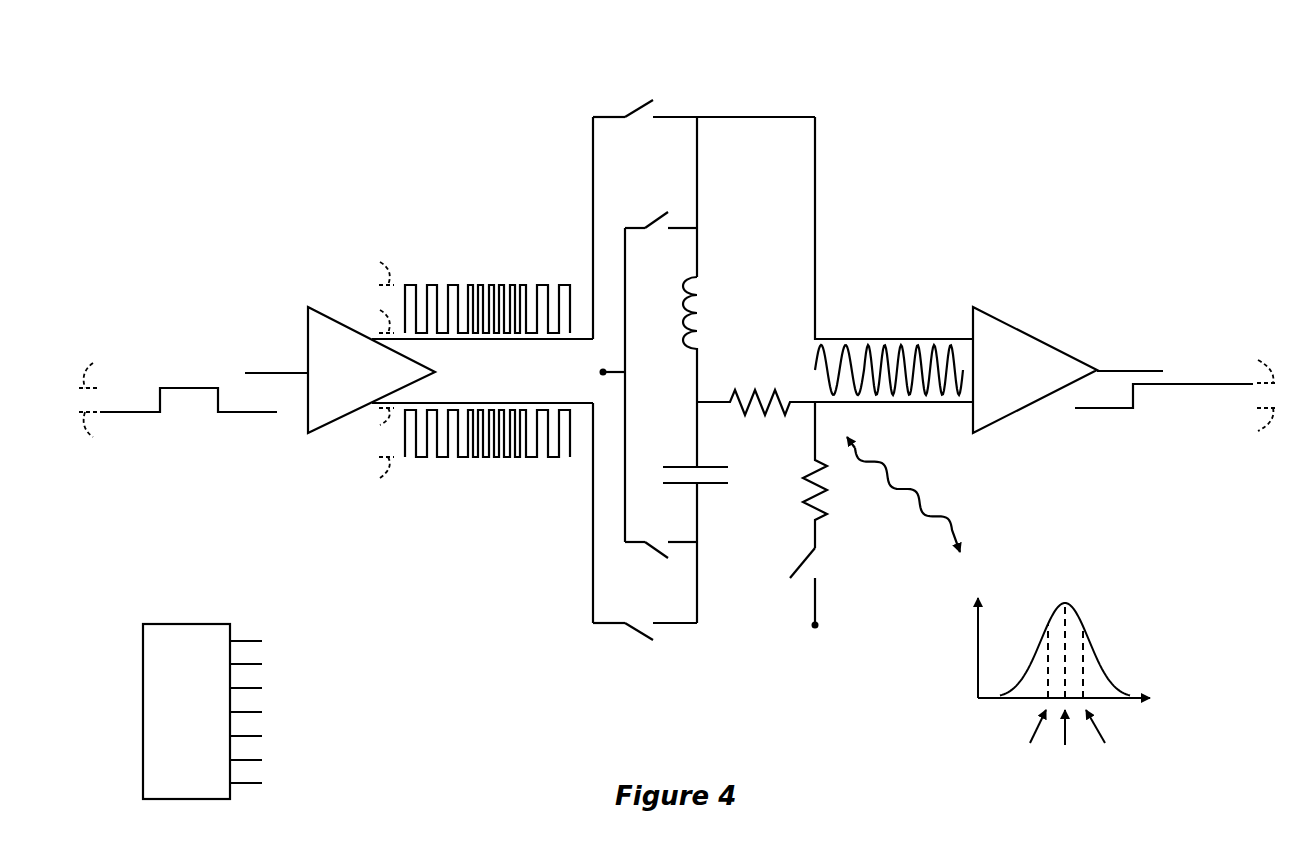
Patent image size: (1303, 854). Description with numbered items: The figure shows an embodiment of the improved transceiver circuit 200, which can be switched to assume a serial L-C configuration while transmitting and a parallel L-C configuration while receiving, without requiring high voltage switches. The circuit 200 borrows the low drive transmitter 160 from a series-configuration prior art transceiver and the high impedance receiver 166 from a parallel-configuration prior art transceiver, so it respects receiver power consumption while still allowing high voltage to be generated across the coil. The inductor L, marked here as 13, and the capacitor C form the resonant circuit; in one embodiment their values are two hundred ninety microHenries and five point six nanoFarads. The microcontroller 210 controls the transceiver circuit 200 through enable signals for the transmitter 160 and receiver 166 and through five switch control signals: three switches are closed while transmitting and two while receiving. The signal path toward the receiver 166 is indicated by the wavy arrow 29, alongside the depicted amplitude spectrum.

The improved transceiver circuit 200 is at (318, 81).
The low drive transmitter 160 is at (308, 328).
The high impedance receiver 166 is at (1007, 320).
The microcontroller 210 is at (244, 711).
The signal 29 is at (948, 537).
The inductor L 13 is at (720, 313).